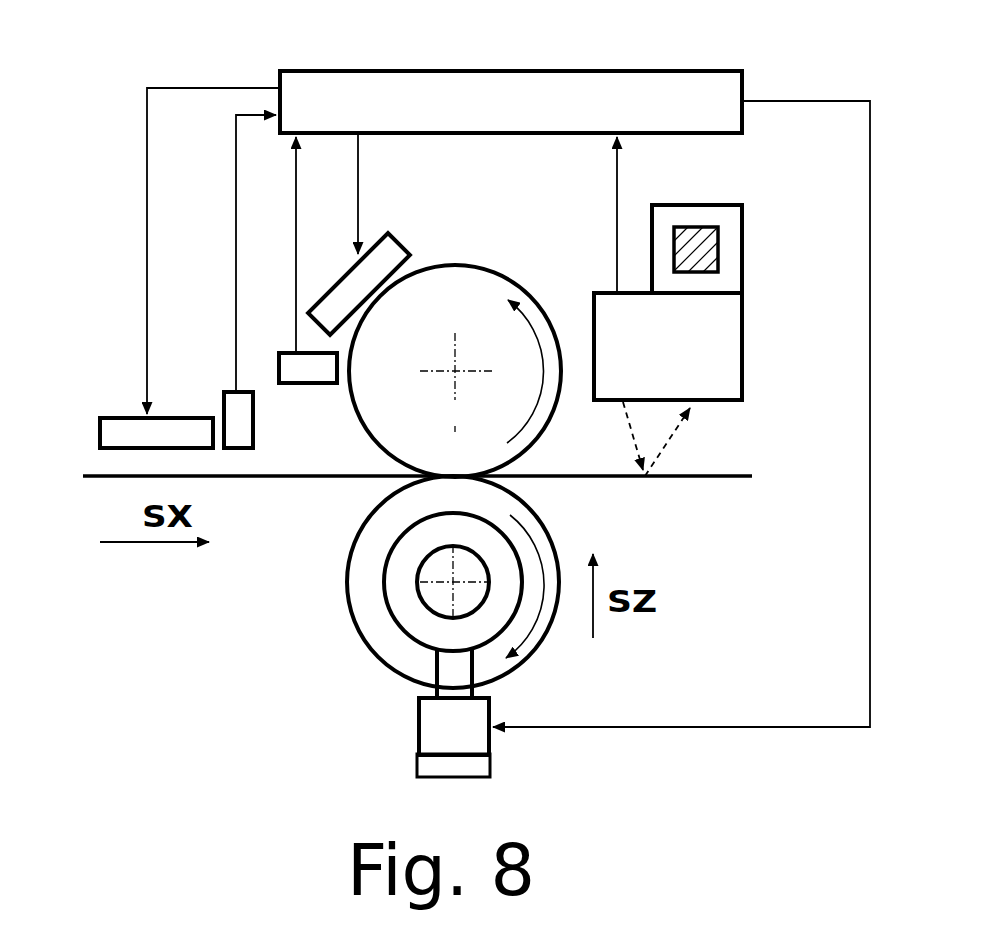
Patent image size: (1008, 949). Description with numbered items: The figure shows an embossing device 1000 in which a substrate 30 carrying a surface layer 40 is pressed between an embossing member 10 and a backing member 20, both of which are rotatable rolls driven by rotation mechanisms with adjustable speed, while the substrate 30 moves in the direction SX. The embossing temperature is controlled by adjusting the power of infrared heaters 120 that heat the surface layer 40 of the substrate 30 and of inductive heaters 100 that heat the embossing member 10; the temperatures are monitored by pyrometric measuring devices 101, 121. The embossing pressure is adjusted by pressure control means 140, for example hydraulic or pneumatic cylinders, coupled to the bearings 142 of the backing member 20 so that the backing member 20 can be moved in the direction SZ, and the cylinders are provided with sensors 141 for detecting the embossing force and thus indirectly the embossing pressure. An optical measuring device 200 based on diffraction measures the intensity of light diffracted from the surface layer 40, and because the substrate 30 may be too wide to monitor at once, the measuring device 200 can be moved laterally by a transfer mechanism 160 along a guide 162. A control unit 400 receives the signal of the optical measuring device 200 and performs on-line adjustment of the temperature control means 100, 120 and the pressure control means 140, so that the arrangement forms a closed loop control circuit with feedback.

The embossing device 1000 is at (208, 53).
The control unit 400 is at (527, 68).
The transfer mechanism 160 is at (742, 280).
The guide 162 is at (718, 250).
The optical measuring device 200 is at (742, 357).
The surface layer 40 is at (713, 477).
The substrate 30 is at (703, 478).
The embossing member 10 is at (477, 265).
The inductive heater 100 is at (403, 245).
The pyrometric measuring device 101 is at (282, 353).
The infrared heater 120 is at (125, 417).
The pyrometric measuring device 121 is at (227, 392).
The backing member 20 is at (345, 583).
The bearing 142 is at (383, 593).
The pressure control means 140 is at (417, 735).
The sensor 141 is at (417, 763).